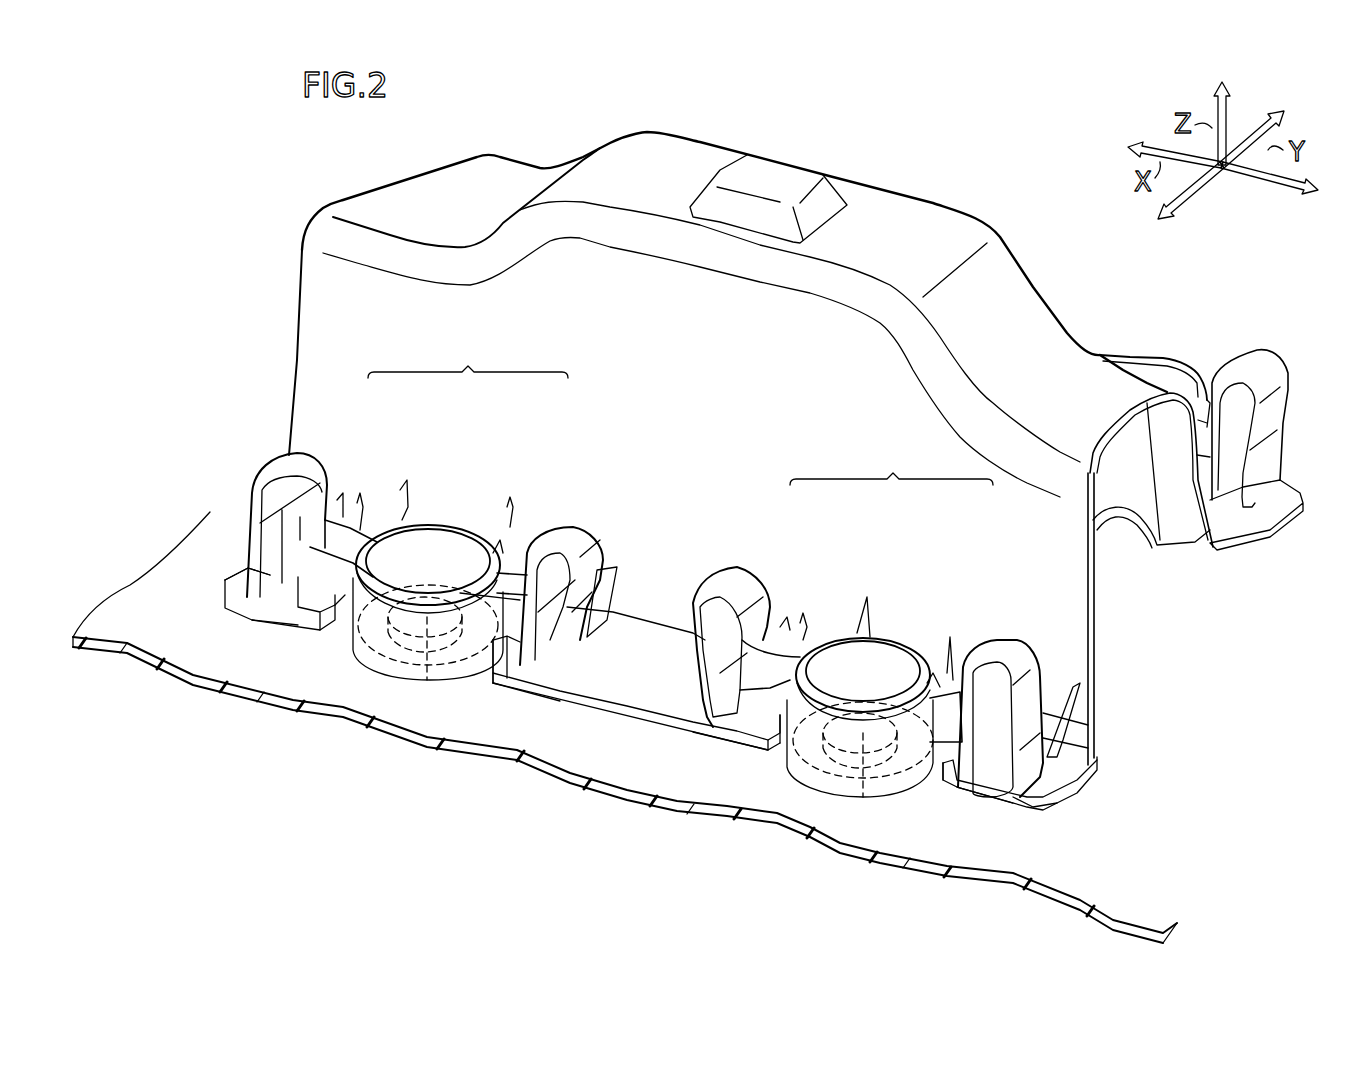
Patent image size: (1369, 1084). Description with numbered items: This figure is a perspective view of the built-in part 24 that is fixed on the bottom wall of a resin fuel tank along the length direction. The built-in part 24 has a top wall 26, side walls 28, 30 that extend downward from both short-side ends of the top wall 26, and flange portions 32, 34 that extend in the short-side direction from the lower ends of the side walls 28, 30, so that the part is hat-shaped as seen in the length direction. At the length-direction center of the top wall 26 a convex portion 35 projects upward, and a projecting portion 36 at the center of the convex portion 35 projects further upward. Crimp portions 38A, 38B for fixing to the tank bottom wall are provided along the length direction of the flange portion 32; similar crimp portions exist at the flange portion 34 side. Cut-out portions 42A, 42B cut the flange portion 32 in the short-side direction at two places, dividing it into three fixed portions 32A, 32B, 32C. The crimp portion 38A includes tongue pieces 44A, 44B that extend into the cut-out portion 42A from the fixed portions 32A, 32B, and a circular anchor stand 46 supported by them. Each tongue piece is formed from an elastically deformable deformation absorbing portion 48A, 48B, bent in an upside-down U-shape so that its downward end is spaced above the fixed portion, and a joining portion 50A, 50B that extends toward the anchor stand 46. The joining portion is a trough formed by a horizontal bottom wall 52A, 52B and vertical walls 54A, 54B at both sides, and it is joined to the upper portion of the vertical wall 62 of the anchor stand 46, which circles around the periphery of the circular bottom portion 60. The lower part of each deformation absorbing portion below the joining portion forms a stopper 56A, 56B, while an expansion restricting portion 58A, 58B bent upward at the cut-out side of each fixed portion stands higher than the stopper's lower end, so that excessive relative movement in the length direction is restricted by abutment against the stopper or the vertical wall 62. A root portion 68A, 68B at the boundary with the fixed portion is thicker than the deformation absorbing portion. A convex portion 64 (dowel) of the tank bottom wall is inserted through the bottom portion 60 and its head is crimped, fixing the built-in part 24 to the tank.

The built-in part 24 is at (683, 118).
The top wall 26 is at (1060, 350).
The side wall 28 is at (1092, 638).
The side wall 30 is at (1197, 515).
The flange portion 32 is at (1085, 785).
The fixed portion 32A is at (255, 618).
The fixed portion 32B is at (605, 710).
The fixed portion 32C is at (1022, 805).
The flange portion 34 is at (1295, 520).
The convex portion 35 is at (900, 205).
The projecting portion 36 is at (780, 175).
The crimp portion 38A is at (468, 359).
The crimp portion 38B is at (891, 464).
The cut-out portion 42A is at (370, 650).
The cut-out portion 42B is at (920, 795).
The tongue piece 44A is at (366, 465).
The tongue piece 44B is at (577, 508).
The anchor stand 46 is at (446, 512).
The deformation absorbing portion 48A is at (280, 470).
The deformation absorbing portion 48B is at (585, 518).
The joining portion 50A is at (395, 515).
The joining portion 50B is at (505, 560).
The bottom wall 52A is at (378, 568).
The bottom wall 52B is at (810, 677).
The vertical walls 54A is at (372, 530).
The vertical walls 54B is at (530, 545).
The stopper 56A is at (264, 624).
The stopper 56B is at (546, 692).
The expansion restricting portion 58A is at (322, 640).
The expansion restricting portion 58B is at (478, 675).
The bottom portion 60 is at (392, 660).
The vertical wall 62 is at (460, 520).
The convex portion 64 is at (431, 680).
The root portion 68A is at (232, 591).
The root portion 68B is at (575, 675).